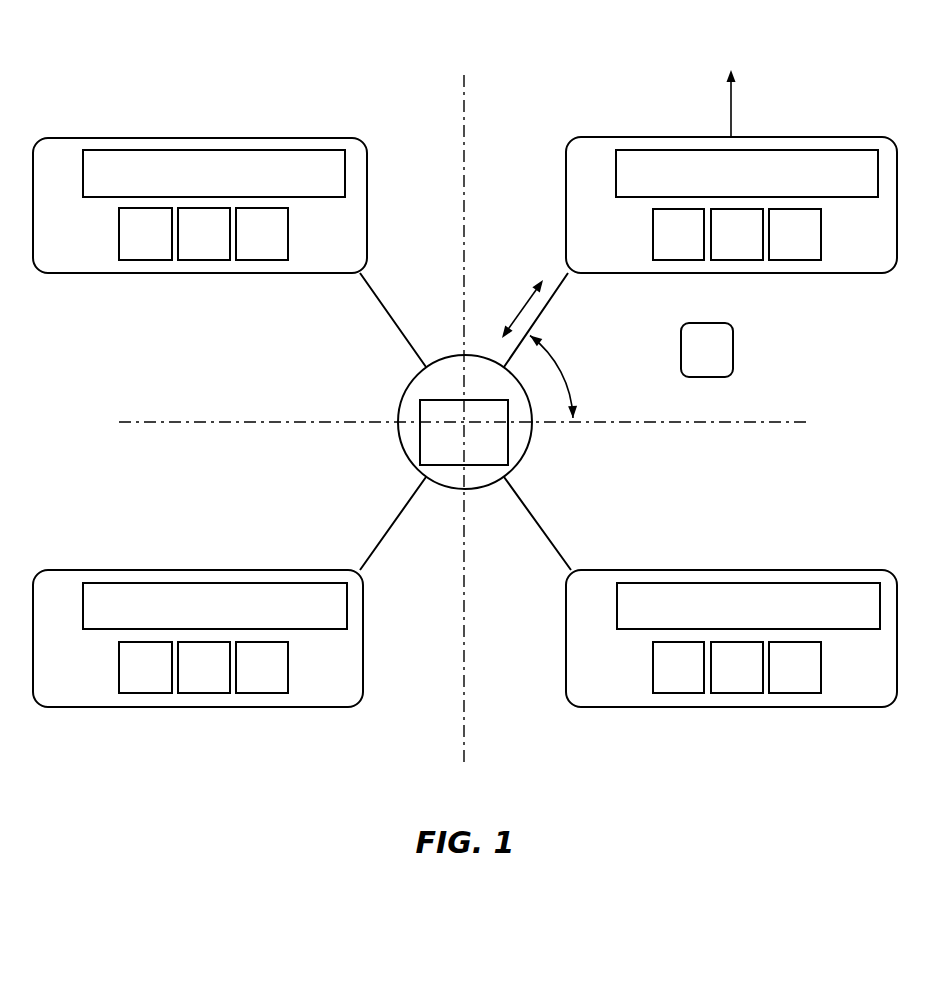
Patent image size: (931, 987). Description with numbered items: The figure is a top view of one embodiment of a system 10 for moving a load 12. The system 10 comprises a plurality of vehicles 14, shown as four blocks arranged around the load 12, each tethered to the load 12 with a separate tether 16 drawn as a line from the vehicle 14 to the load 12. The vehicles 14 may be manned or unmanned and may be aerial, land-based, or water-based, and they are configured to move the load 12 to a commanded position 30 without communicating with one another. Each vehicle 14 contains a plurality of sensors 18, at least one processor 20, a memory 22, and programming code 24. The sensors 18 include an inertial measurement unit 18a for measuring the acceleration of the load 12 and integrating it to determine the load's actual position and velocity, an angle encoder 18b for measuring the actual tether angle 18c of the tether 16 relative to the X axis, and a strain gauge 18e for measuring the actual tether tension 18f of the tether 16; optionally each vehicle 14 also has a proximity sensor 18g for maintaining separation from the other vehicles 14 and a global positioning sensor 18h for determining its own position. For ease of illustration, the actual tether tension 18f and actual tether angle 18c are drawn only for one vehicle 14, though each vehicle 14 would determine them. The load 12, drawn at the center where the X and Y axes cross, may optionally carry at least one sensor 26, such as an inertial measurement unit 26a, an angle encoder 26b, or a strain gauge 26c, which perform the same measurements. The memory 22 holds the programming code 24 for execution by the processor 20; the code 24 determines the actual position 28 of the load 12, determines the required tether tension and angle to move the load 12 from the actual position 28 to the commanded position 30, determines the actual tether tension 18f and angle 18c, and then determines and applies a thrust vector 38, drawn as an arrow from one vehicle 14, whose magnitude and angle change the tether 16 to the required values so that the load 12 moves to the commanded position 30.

The system for moving a load 10 is at (562, 75).
The load 12 is at (442, 420).
The vehicle 14 is at (596, 601).
The tether 16 is at (393, 313).
The plurality of sensors 18 is at (481, 389).
The inertial measurement unit 18a is at (481, 389).
The angle encoder 18b is at (481, 389).
The actual tether angle 18c is at (564, 375).
The strain gauge 18e is at (481, 389).
The actual tether tension 18f is at (521, 311).
The proximity sensor 18g is at (481, 389).
The global positioning sensor 18h is at (860, 616).
The processor 20 is at (689, 676).
The memory 22 is at (748, 676).
The programming code 24 is at (806, 676).
The sensor 26 is at (464, 432).
The inertial measurement unit 26a is at (464, 432).
The angle encoder 26b is at (464, 432).
The strain gauge 26c is at (498, 458).
The actual position 28 is at (404, 391).
The commanded position 30 is at (696, 359).
The thrust vector 38 is at (733, 108).